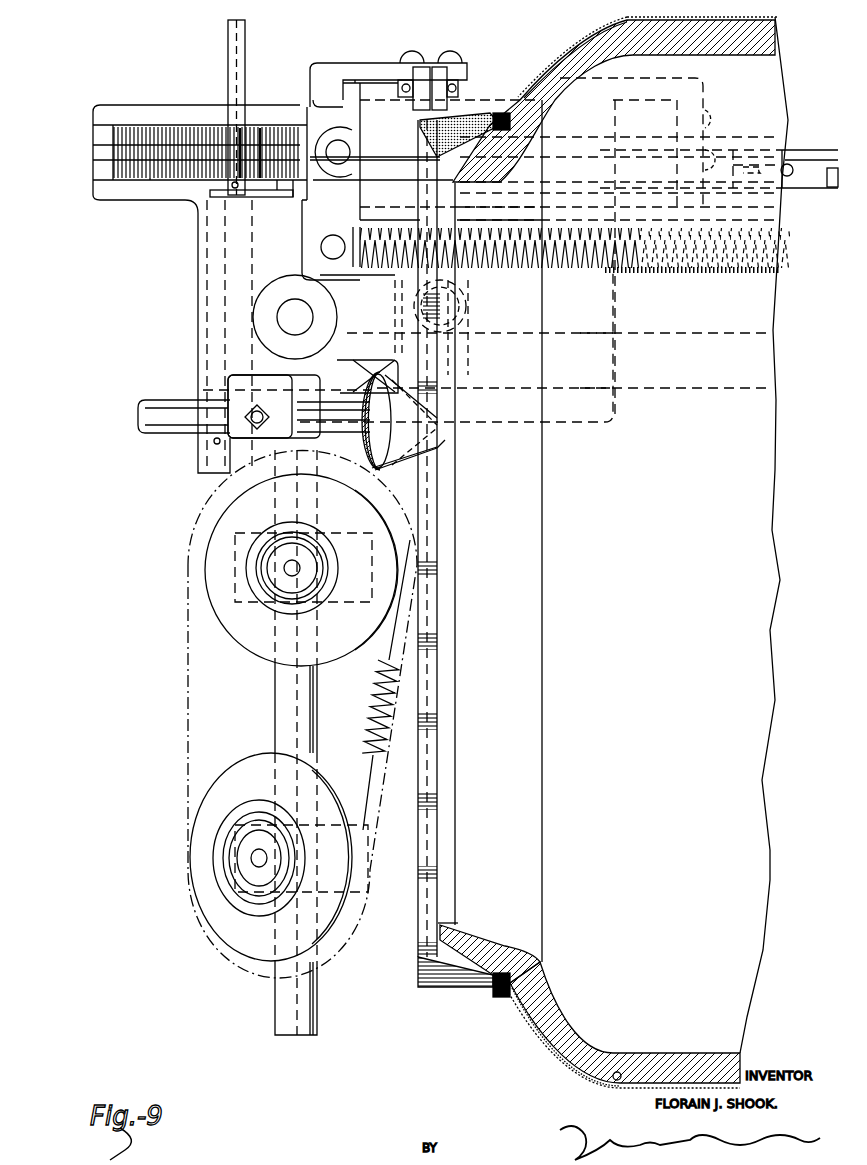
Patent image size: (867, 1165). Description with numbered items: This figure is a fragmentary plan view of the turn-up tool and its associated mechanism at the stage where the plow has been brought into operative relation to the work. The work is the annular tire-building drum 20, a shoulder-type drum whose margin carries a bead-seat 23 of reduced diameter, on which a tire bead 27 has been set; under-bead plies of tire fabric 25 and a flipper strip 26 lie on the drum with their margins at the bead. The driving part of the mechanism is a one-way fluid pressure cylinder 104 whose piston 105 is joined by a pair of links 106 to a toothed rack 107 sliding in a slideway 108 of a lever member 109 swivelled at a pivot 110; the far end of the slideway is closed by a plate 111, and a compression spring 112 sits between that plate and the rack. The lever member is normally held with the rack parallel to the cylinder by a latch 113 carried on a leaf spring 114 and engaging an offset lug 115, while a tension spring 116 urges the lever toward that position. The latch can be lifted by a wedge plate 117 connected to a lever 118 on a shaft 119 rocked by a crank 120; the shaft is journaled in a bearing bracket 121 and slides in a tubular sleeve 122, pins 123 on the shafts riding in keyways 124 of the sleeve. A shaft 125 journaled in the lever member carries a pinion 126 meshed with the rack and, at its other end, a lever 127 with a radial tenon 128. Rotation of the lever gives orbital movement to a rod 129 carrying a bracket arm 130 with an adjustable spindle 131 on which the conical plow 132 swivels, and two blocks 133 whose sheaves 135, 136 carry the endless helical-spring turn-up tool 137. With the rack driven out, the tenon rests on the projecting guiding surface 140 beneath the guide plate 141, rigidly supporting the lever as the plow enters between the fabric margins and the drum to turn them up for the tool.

The tire-building form or drum 20 is at (620, 552).
The bead-seat 23 is at (497, 968).
The under-bead ply of tire fabric 25 is at (615, 1078).
The flipper strip 26 is at (582, 1072).
The tire bead 27 is at (493, 992).
The fluid pressure operated cylinder 104 is at (690, 105).
The piston 105 is at (545, 80).
The links 106 is at (383, 68).
The toothed rack 107 is at (300, 130).
The slideway 108 is at (150, 180).
The lever member 109 is at (197, 272).
The swivel pivot 110 is at (283, 316).
The plate 111 is at (93, 175).
The compression spring 112 is at (143, 128).
The latch 113 is at (385, 65).
The leaf spring 114 is at (492, 78).
The offset lug 115 is at (335, 90).
The tension spring 116 is at (385, 272).
The cam or wedge plate 117 is at (450, 78).
The lever 118 is at (422, 78).
The shaft 119 is at (262, 175).
The crank 120 is at (228, 43).
The bearing bracket 121 is at (568, 302).
The tubular sleeve 122 is at (822, 150).
The pin 123 is at (788, 177).
The slot or keyway 124 is at (828, 190).
The shaft 125 is at (212, 303).
The pinion 126 is at (208, 130).
The lever 127 is at (197, 470).
The lug or locking tenon 128 is at (390, 470).
The rod 129 is at (283, 690).
The bracket arm 130 is at (250, 378).
The adjustable spindle 131 is at (150, 420).
The conical tool or plow 132 is at (420, 435).
The block 133 is at (237, 580).
The sheave 135 is at (248, 640).
The sheave 136 is at (230, 940).
The turn-up tool 137 is at (376, 717).
The guiding surface 140 is at (420, 465).
The guide plate 141 is at (470, 353).